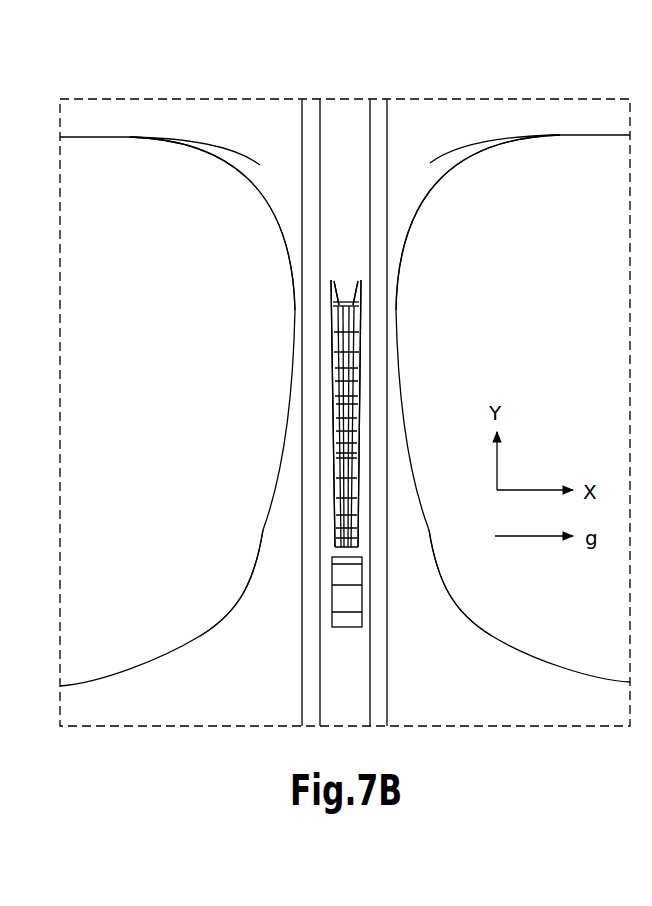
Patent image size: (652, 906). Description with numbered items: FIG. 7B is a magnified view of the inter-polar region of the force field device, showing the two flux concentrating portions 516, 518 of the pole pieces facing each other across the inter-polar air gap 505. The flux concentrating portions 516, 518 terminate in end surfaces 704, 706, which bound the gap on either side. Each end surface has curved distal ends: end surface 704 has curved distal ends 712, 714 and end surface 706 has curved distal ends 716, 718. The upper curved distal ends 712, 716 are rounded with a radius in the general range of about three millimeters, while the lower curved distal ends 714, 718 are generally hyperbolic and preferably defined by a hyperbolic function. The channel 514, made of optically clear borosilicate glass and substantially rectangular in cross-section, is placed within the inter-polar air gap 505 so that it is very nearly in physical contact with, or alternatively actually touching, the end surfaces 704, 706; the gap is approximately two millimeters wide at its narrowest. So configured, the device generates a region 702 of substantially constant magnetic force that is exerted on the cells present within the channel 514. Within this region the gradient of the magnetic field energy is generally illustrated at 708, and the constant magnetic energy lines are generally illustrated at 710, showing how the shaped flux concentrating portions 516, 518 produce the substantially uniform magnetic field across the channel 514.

The region of substantially constant magnetic force 702 is at (343, 545).
The end surface 704 is at (254, 157).
The end surface 706 is at (449, 142).
The gradient of the magnetic field energy 708 is at (343, 292).
The constant magnetic energy lines 710 is at (350, 297).
The curved distal end 712 is at (207, 152).
The curved distal end 714 is at (238, 610).
The curved distal end 716 is at (488, 147).
The curved distal end 718 is at (457, 611).
The channel 514 is at (388, 673).
The flux concentrating portion 516 is at (212, 399).
The flux concentrating portion 518 is at (564, 390).
The inter-polar air gap 505 is at (277, 587).